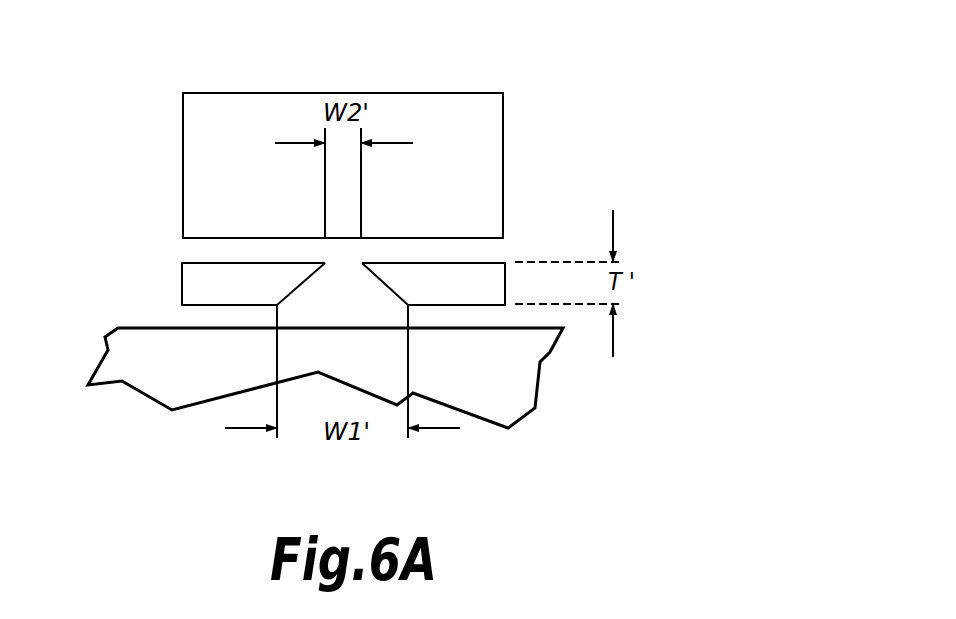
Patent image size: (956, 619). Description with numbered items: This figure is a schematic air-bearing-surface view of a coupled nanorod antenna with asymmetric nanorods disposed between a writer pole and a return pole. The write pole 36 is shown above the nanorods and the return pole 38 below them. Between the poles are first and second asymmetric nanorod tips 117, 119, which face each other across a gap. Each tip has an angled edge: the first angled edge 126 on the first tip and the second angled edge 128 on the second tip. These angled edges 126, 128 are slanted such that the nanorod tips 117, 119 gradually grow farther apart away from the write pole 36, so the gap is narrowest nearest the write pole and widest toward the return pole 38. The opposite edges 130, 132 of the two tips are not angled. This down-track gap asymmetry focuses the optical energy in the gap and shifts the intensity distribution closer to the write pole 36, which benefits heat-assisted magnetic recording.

The write pole 36 is at (451, 124).
The first asymmetric nanorod tip 117 is at (205, 281).
The second asymmetric nanorod tip 119 is at (475, 281).
The first angled edge 126 is at (303, 280).
The second angled edge 128 is at (385, 283).
The opposite edge 130 is at (182, 295).
The opposite edge 132 is at (505, 295).
The return pole 38 is at (495, 380).